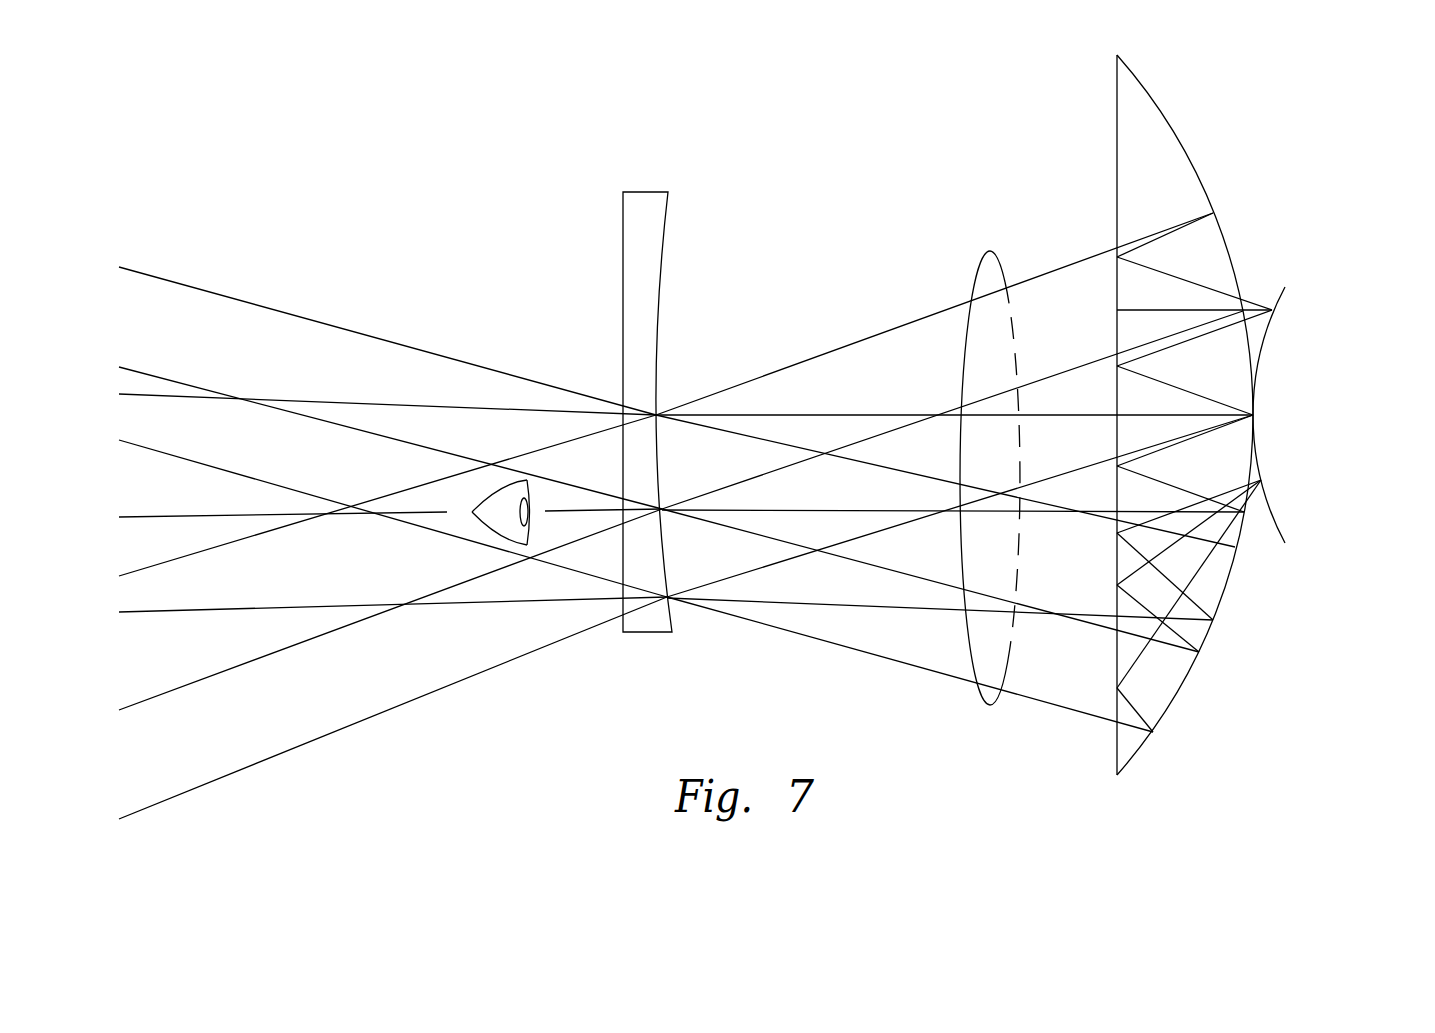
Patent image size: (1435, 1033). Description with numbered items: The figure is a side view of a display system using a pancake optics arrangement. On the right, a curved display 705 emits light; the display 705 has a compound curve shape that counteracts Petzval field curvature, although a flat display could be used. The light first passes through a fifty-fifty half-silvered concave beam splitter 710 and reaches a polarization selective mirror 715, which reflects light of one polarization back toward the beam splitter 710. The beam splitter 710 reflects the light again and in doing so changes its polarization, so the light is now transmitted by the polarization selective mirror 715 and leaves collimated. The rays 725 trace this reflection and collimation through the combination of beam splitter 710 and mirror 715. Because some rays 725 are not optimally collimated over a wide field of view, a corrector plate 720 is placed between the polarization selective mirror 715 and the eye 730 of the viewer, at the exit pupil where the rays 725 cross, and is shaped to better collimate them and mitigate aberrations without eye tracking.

The display 705 is at (1275, 518).
The beam splitter 710 is at (1153, 102).
The polarization selective mirror 715 is at (1114, 80).
The corrector plate 720 is at (657, 166).
The rays 725 is at (1000, 224).
The eye 730 is at (497, 521).